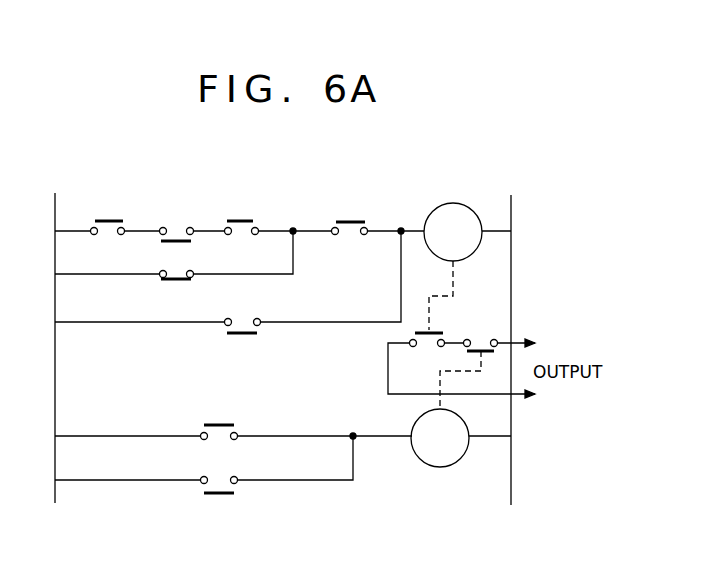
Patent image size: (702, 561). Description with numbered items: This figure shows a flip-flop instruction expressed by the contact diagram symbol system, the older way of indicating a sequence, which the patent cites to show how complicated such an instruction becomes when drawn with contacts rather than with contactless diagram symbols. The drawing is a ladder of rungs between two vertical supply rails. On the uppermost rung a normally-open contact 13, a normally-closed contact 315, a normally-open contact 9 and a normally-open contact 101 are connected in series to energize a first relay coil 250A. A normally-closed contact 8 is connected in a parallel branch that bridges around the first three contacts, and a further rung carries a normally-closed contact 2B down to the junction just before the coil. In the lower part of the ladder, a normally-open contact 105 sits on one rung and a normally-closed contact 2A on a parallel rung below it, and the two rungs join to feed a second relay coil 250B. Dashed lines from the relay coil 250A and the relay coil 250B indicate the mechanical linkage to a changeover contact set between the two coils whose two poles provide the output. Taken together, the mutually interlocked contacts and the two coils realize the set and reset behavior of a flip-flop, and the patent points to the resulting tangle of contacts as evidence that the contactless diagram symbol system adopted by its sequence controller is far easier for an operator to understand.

The normally-open contact 13 is at (108, 213).
The normally-closed contact 315 is at (175, 216).
The normally-open contact 9 is at (242, 213).
The normally-open contact 101 is at (350, 213).
The normally-closed contact 8 is at (177, 289).
The normally-closed contact 2B is at (243, 311).
The normally-open contact 105 is at (219, 418).
The normally-closed contact 2A is at (219, 471).
The relay coil 250A is at (453, 232).
The relay coil 250B is at (440, 438).